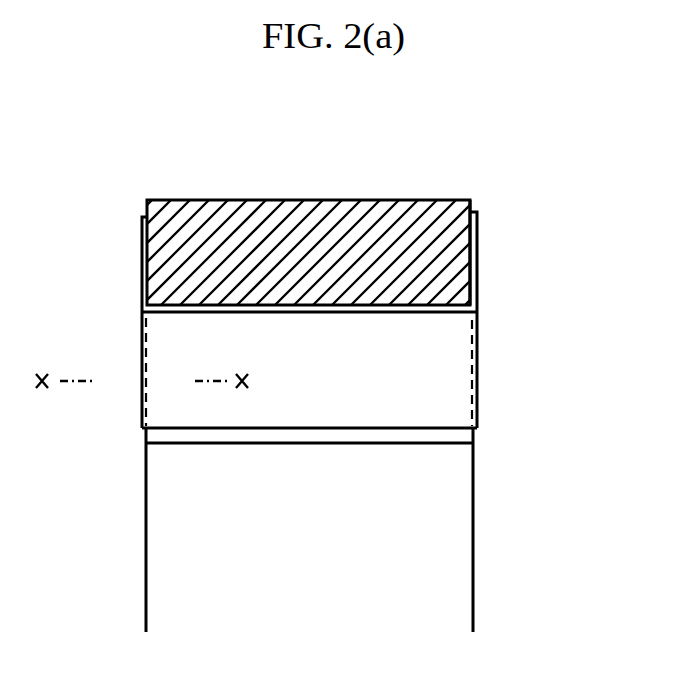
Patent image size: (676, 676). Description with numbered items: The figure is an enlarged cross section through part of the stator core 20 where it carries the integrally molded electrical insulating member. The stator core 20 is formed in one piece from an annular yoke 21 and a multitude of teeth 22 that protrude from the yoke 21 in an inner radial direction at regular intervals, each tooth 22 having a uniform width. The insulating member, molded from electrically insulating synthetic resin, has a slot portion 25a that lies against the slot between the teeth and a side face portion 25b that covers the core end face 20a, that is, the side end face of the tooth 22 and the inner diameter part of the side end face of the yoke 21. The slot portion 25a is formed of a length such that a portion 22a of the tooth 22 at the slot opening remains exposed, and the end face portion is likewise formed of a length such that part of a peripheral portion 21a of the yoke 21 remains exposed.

The stator core 20 is at (231, 165).
The annular yoke 21 is at (180, 200).
The peripheral portion of the yoke 21a is at (474, 206).
The end face of the core 20a is at (142, 252).
The side face portion 25b is at (142, 290).
The slot portion 25a is at (457, 348).
The tooth 22 is at (329, 443).
The portion of the tooth at the opening 22a is at (175, 444).